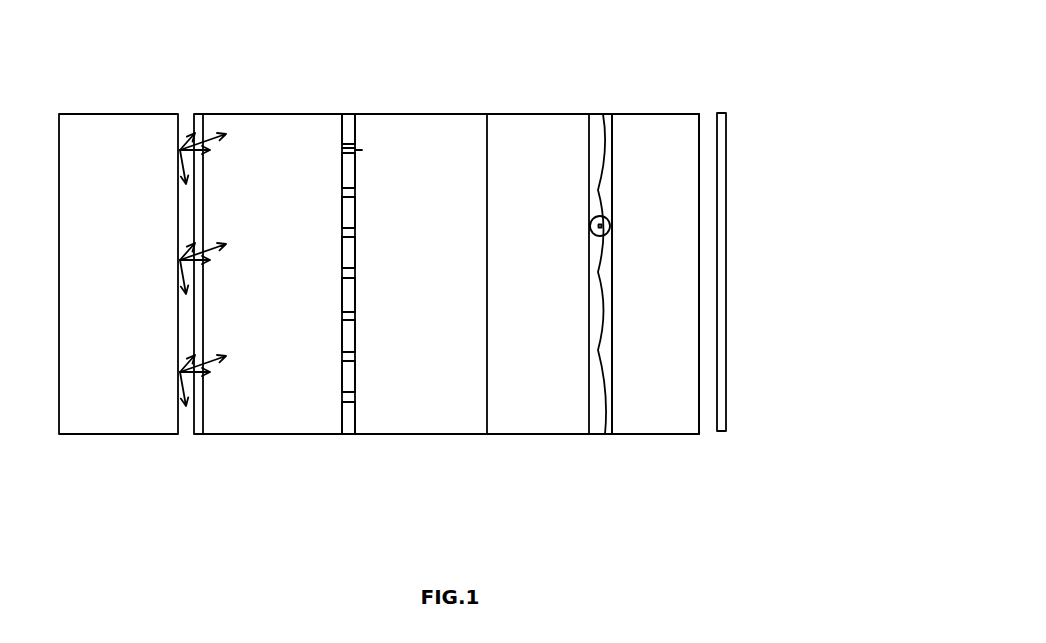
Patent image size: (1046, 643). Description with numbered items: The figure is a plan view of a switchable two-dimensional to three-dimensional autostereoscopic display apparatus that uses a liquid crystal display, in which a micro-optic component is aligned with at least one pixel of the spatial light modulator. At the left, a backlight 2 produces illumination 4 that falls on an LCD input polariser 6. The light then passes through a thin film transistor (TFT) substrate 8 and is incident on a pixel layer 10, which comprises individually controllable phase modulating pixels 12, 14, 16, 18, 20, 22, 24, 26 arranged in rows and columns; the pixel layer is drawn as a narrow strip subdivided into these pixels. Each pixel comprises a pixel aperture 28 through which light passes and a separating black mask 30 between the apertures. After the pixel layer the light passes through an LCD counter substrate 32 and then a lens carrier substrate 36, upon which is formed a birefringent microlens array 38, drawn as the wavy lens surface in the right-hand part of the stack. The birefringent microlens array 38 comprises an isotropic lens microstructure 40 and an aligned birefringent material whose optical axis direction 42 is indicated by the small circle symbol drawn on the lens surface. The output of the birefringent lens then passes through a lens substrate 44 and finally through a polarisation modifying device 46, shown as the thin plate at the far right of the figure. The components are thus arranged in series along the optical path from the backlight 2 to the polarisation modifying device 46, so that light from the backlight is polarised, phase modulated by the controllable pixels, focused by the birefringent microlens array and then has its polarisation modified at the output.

The backlight 2 is at (123, 436).
The illumination 4 is at (180, 142).
The LCD input polariser 6 is at (205, 436).
The thin film transistor (TFT) substrate 8 is at (278, 436).
The pixel layer 10 is at (350, 436).
The phase modulating pixel 12 is at (342, 137).
The phase modulating pixel 14 is at (342, 179).
The phase modulating pixel 16 is at (342, 219).
The phase modulating pixel 18 is at (342, 259).
The phase modulating pixel 20 is at (342, 300).
The phase modulating pixel 22 is at (342, 341).
The phase modulating pixel 24 is at (342, 382).
The phase modulating pixel 26 is at (342, 423).
The pixel aperture 28 is at (356, 128).
The black mask 30 is at (357, 150).
The LCD counter substrate 32 is at (423, 436).
The lens carrier substrate 36 is at (547, 436).
The birefringent microlens array 38 is at (603, 114).
The isotropic lens microstructure 40 is at (607, 432).
The optical axis direction 42 is at (589, 226).
The lens substrate 44 is at (647, 138).
The polarisation modifying device 46 is at (723, 431).